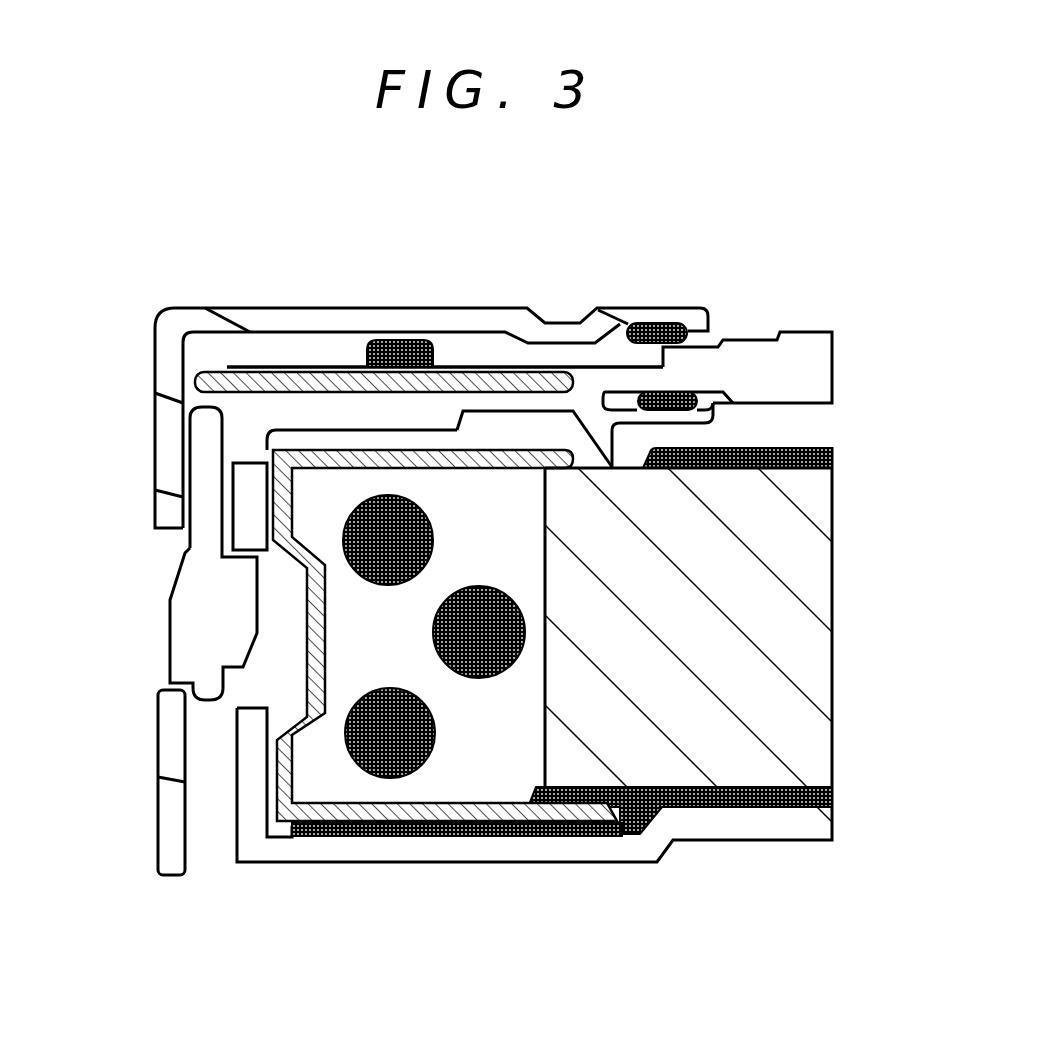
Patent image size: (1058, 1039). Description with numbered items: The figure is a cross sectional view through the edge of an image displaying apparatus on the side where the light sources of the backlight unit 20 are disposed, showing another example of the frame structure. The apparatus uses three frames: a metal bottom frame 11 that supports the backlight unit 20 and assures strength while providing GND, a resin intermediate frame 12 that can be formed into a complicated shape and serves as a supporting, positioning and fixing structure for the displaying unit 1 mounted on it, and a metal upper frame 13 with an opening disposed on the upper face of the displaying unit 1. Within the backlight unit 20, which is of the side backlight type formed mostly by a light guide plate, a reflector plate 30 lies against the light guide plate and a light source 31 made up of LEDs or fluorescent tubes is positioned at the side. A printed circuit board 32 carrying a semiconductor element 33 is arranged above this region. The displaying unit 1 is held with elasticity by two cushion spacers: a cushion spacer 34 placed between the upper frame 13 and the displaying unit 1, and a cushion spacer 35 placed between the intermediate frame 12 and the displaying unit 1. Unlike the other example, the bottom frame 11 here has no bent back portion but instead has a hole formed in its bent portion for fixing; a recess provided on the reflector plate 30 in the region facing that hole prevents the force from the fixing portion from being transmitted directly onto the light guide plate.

The displaying unit 1 is at (820, 359).
The bottom frame 11 is at (243, 487).
The intermediate frame 12 is at (190, 598).
The upper frame 13 is at (162, 430).
The backlight unit 20 is at (810, 628).
The reflector plate 30 is at (562, 828).
The light source 31 is at (370, 583).
The printed circuit board 32 is at (315, 383).
The semiconductor element 33 is at (393, 343).
The cushion spacer 34 is at (650, 328).
The cushion spacer 35 is at (687, 390).